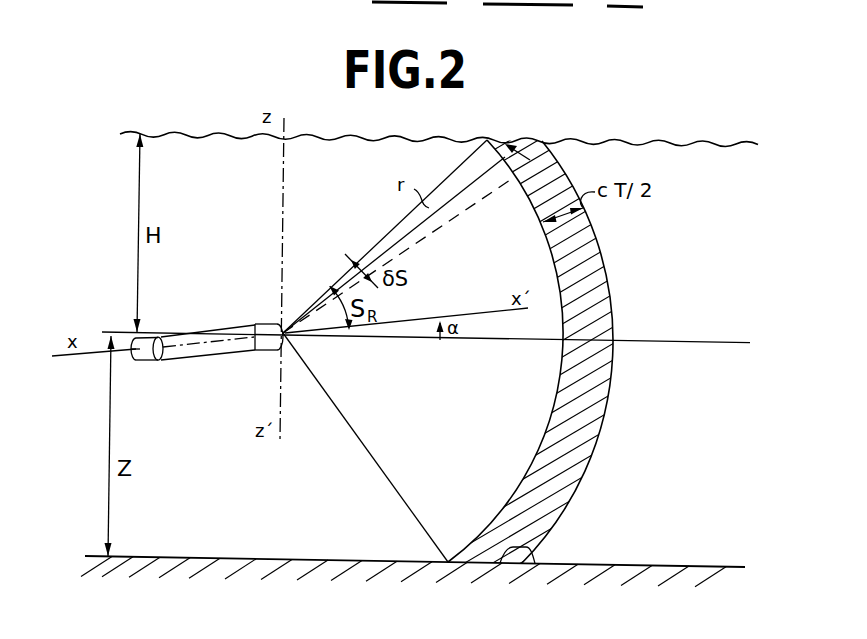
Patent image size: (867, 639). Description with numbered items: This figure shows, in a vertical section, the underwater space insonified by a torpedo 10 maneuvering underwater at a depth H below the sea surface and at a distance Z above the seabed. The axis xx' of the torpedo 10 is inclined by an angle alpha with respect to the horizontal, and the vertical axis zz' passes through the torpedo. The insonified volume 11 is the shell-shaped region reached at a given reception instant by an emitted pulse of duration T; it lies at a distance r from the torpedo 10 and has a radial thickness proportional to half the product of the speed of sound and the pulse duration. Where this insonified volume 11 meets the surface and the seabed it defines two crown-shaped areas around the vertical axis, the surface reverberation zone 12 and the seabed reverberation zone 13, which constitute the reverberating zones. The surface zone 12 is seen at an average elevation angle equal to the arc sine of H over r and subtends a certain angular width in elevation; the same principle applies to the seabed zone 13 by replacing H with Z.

The torpedo 10 is at (220, 348).
The insonified volume 11 is at (598, 421).
The surface reverberation zone 12 is at (514, 140).
The seabed reverberation zone 13 is at (527, 548).